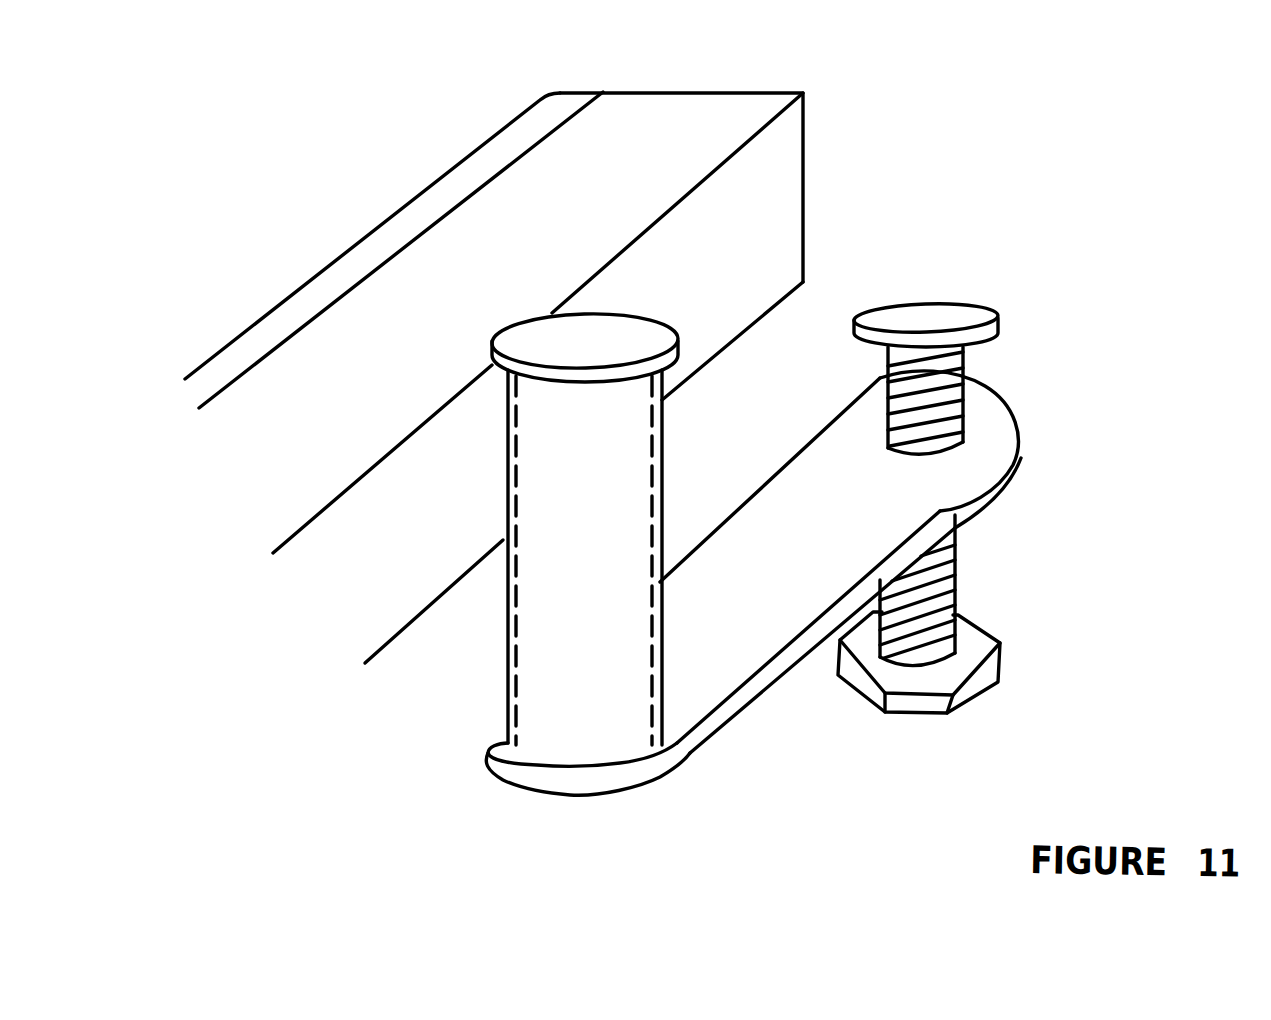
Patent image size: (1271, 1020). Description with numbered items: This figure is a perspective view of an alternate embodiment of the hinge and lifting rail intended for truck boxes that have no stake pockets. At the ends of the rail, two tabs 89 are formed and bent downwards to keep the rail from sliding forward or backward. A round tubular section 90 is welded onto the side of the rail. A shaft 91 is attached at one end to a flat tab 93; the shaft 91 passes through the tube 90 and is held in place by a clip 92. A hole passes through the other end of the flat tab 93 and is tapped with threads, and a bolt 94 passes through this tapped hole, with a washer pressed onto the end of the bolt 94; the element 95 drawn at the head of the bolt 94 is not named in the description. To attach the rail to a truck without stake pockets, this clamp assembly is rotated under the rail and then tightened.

The tab 89 is at (806, 93).
The clip 92 is at (627, 313).
The round tubular section 90 is at (662, 450).
The shaft 91 is at (572, 642).
The flat tab 93 is at (878, 500).
The bolt 95 is at (968, 322).
The bolt 94 is at (973, 665).